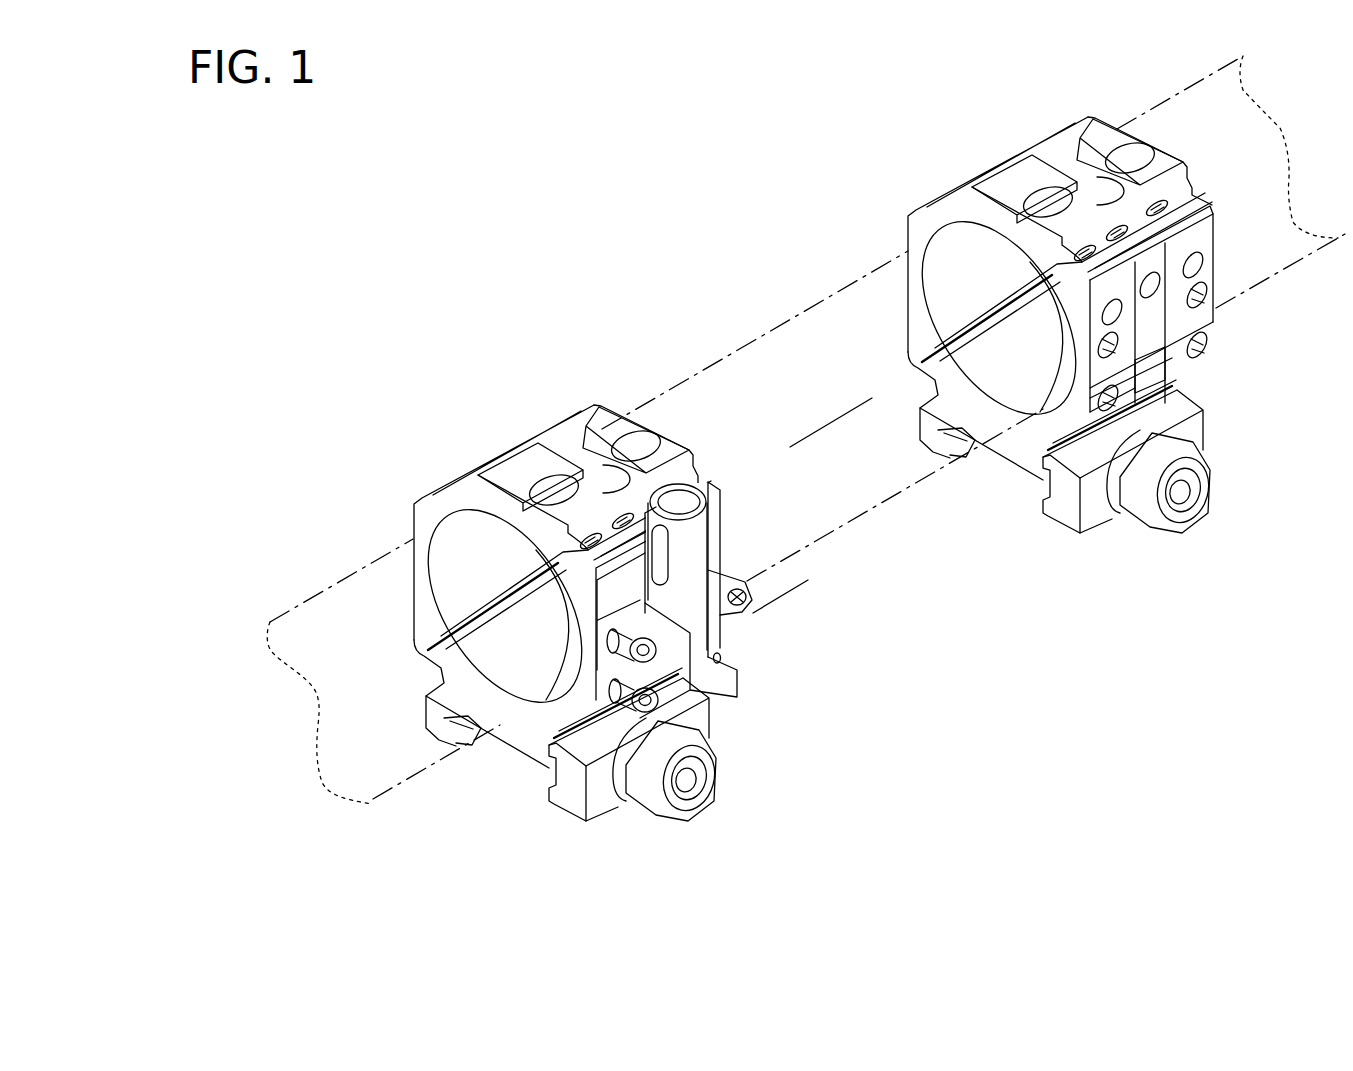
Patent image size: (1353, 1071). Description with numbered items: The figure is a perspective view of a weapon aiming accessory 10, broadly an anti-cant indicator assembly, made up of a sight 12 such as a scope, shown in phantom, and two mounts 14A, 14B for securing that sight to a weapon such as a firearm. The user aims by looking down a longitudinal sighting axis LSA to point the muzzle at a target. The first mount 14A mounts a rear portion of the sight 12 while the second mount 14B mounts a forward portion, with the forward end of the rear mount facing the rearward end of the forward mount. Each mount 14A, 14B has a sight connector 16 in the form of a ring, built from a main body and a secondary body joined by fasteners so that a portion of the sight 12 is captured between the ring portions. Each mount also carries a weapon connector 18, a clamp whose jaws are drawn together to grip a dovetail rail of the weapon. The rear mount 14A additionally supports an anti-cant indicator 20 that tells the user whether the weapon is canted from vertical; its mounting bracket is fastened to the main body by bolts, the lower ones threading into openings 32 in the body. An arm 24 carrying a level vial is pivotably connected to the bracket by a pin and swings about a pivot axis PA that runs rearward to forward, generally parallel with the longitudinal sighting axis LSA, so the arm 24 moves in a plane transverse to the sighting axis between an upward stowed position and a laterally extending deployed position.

The weapon aiming accessory 10 is at (647, 172).
The sight 12 is at (669, 371).
The first mount 14A is at (476, 390).
The second mount 14B is at (981, 131).
The sight connector 16 is at (429, 476).
The weapon connector 18 is at (554, 824).
The anti-cant indicator 20 is at (757, 672).
The arm 24 is at (692, 540).
The openings 32 is at (1207, 355).
The longitudinal sighting axis LSA is at (840, 417).
The pivot axis PA is at (785, 598).